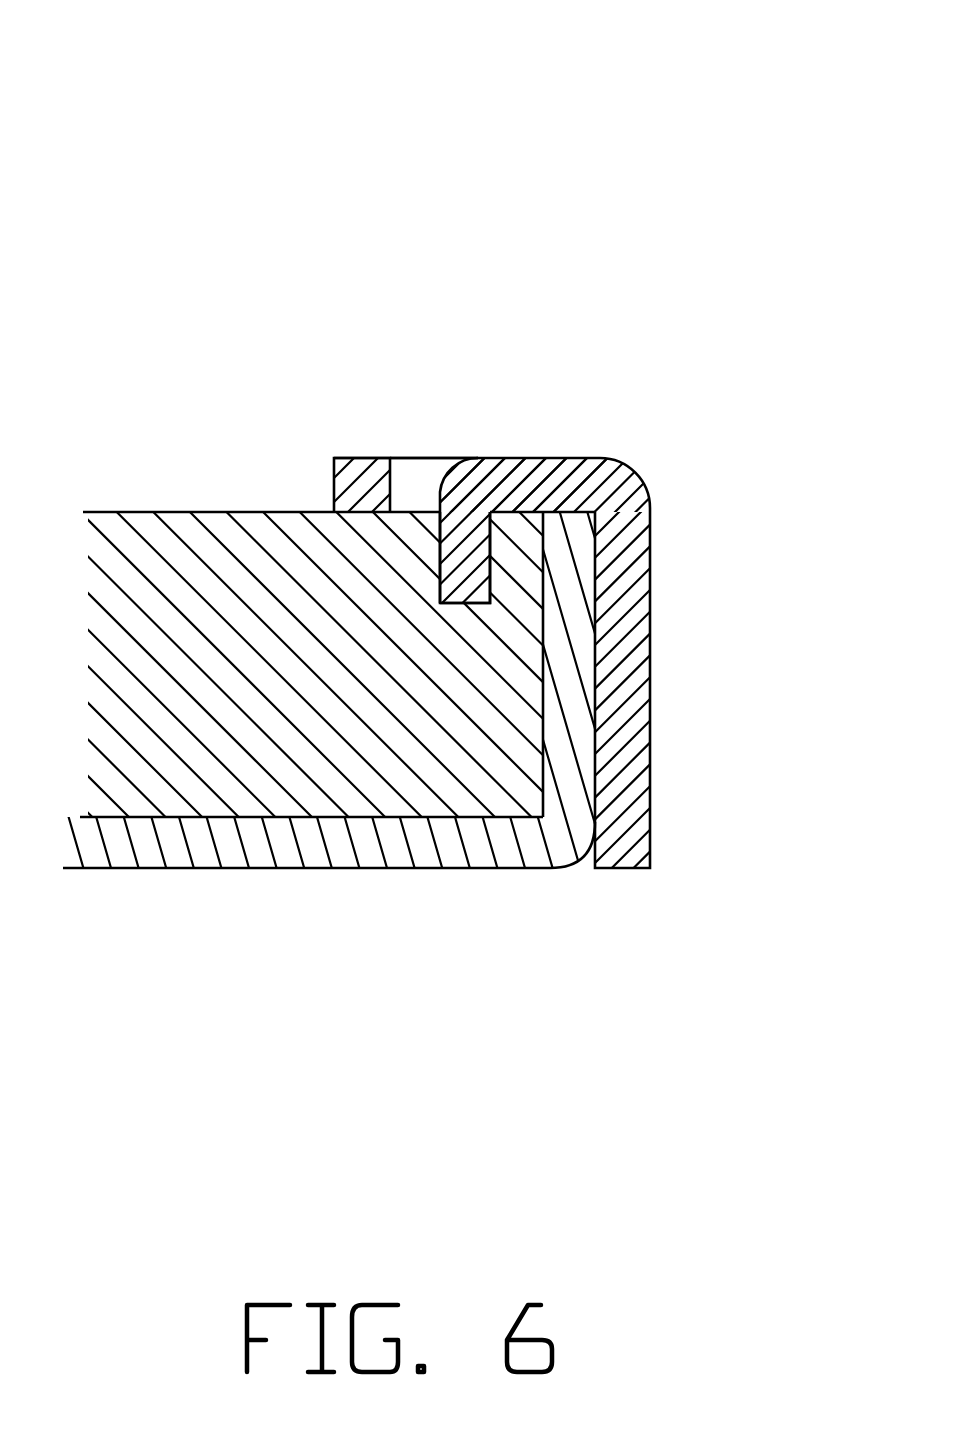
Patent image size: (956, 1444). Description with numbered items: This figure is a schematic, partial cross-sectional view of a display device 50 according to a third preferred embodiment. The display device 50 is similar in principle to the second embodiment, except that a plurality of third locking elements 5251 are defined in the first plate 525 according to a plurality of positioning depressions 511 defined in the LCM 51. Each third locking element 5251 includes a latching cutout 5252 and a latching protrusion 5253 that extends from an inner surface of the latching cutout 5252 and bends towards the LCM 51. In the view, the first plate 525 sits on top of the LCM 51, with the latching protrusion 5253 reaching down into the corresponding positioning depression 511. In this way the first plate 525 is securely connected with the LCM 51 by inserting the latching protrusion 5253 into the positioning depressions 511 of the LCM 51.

The display device 50 is at (385, 55).
The LCM 51 is at (195, 540).
The positioning depression 511 is at (470, 605).
The first plate 525 is at (562, 482).
The third locking element 5251 is at (594, 352).
The latching cutout 5252 is at (408, 487).
The latching protrusion 5253 is at (463, 560).